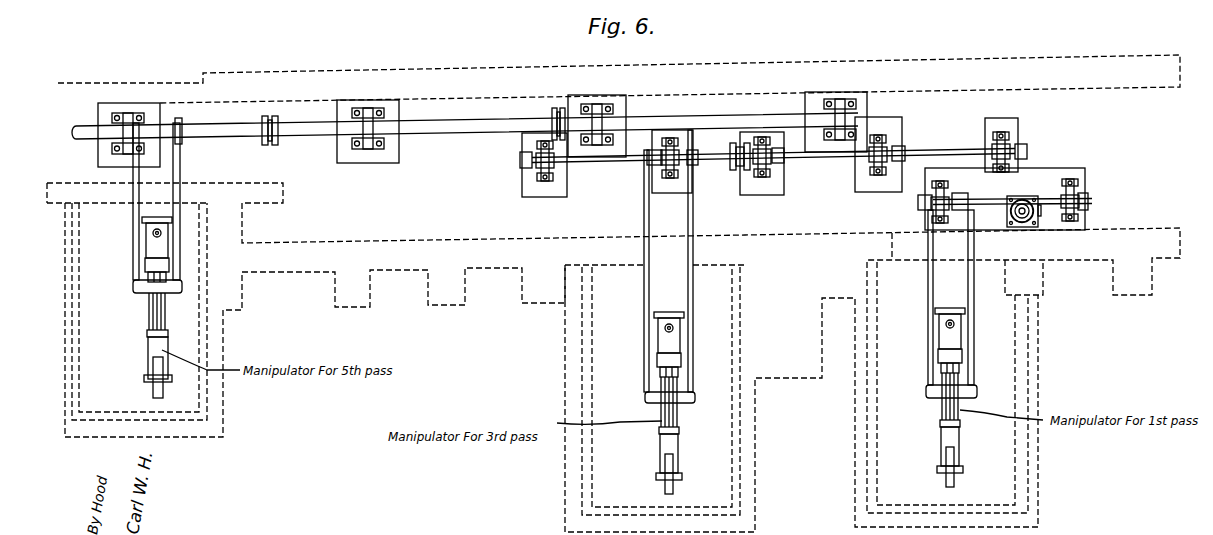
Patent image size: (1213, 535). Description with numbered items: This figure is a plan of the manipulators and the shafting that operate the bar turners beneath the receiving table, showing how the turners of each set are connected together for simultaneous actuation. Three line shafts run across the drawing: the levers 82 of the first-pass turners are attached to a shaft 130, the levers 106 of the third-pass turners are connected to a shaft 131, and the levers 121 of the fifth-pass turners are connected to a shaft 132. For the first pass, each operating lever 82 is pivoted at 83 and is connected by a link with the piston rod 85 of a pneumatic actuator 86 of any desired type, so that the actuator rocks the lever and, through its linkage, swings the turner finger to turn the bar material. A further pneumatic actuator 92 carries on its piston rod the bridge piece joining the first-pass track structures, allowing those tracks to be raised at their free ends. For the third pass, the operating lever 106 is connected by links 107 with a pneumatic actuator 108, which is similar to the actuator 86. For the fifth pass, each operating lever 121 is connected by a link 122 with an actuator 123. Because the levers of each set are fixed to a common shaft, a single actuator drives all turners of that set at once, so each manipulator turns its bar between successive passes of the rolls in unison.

The operating lever 82 is at (948, 197).
The pivot 83 is at (972, 233).
The piston rod 85 is at (952, 410).
The pneumatic actuator 86 is at (947, 335).
The pneumatic actuator 92 is at (1027, 201).
The operating lever 106 is at (521, 168).
The links 107 is at (691, 200).
The pneumatic actuator 108 is at (667, 340).
The operating lever 121 is at (130, 111).
The link 122 is at (138, 196).
The actuator 123 is at (157, 242).
The shaft 130 is at (996, 202).
The shaft 131 is at (845, 156).
The shaft 132 is at (473, 131).